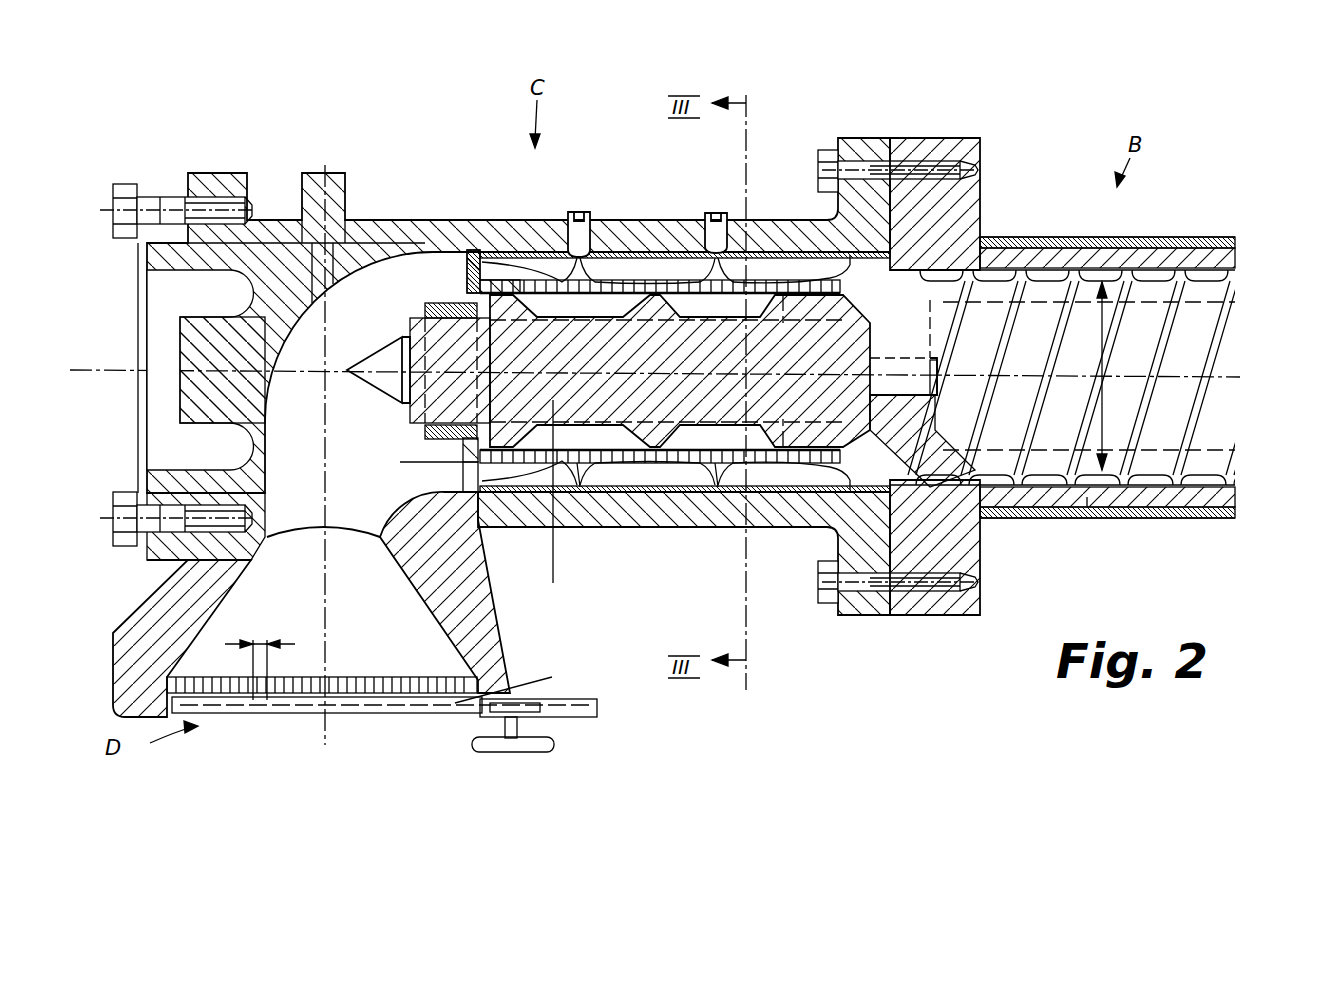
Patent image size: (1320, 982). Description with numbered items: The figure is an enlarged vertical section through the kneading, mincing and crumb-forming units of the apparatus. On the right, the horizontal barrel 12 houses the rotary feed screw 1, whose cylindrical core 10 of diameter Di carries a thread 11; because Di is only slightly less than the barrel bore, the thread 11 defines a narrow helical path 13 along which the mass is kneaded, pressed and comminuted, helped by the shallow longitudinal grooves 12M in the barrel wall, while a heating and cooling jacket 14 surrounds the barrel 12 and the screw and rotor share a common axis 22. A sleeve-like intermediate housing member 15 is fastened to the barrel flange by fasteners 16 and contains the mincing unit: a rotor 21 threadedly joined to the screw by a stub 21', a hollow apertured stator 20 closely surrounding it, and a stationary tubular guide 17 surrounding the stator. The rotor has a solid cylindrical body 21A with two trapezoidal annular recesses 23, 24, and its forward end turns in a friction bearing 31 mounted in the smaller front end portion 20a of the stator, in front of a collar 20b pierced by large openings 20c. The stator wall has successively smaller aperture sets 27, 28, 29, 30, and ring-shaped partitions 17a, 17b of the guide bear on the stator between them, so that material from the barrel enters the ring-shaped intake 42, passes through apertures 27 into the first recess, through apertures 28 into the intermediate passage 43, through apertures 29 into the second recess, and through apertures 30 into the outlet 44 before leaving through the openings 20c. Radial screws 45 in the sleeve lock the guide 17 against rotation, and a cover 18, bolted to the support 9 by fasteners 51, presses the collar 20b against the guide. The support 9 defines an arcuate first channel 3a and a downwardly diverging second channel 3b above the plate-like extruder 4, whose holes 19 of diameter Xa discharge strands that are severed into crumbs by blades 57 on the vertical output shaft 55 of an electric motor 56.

The feed screw 1 is at (1022, 345).
The arcuate first channel 3a is at (337, 323).
The downwardly diverging second channel 3b is at (323, 557).
The extruder 4 is at (405, 675).
The support 9 is at (167, 613).
The core 10 is at (1087, 293).
The thread 11 is at (1120, 293).
The barrel 12 is at (1143, 257).
The grooves 12M is at (1087, 497).
The helical path 13 is at (983, 275).
The heating and/or cooling jacket 14 is at (1185, 513).
The intermediate housing member 15 is at (523, 232).
The fasteners 16 is at (822, 168).
The tubular guide 17 is at (515, 490).
The partition 17a is at (713, 477).
The partition 17b is at (580, 490).
The cover 18 is at (258, 342).
The holes 19 is at (330, 680).
The stator 20 is at (415, 430).
The front end portion 20a is at (432, 312).
The collar 20b is at (445, 305).
The openings 20c is at (470, 470).
The rotor 21 is at (686, 388).
The cylindrical body 21A is at (556, 504).
The stub 21' is at (960, 459).
The axis 22 is at (442, 412).
The annular recess 23 is at (680, 440).
The annular recess 24 is at (548, 440).
The first set of apertures 27 is at (768, 280).
The second set of apertures 28 is at (692, 282).
The third set of apertures 29 is at (640, 282).
The fourth set of apertures 30 is at (553, 280).
The friction bearing 31 is at (440, 307).
The intake 42 is at (790, 477).
The intermediate passage 43 is at (633, 480).
The outlet 44 is at (463, 476).
The radial screws 45 is at (579, 240).
The fasteners 51 is at (133, 195).
The output shaft 55 is at (517, 727).
The electric motor 56 is at (540, 745).
The blades 57 is at (552, 700).
The diameter Di is at (1088, 376).
The diameters Xa is at (260, 659).